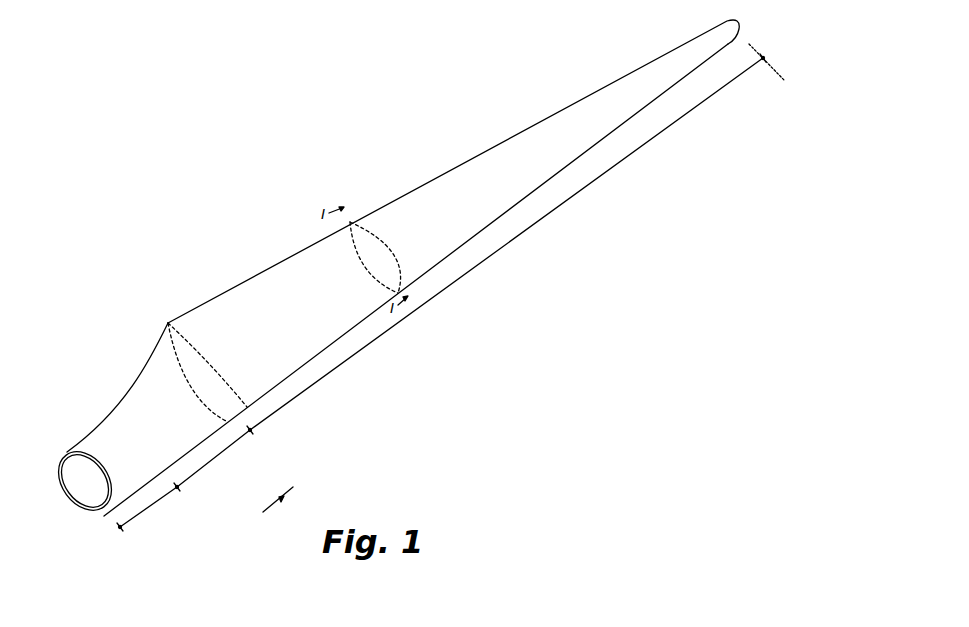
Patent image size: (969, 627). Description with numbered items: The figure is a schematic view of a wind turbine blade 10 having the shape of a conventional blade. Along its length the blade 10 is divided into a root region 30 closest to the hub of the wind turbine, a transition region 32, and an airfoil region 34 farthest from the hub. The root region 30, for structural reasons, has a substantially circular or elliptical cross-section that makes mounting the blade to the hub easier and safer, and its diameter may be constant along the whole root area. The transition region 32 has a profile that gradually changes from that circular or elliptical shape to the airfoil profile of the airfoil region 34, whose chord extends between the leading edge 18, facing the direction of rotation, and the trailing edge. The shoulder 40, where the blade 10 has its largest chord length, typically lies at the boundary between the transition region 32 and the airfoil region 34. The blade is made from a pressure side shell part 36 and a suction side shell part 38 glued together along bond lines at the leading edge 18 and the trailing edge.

The wind turbine blade 10 is at (281, 178).
The leading edge 18 is at (533, 193).
The root region 30 is at (150, 503).
The transition region 32 is at (217, 457).
The airfoil region 34 is at (460, 287).
The pressure side shell part 36 is at (85, 440).
The suction side shell part 38 is at (64, 459).
The shoulder 40 is at (168, 322).